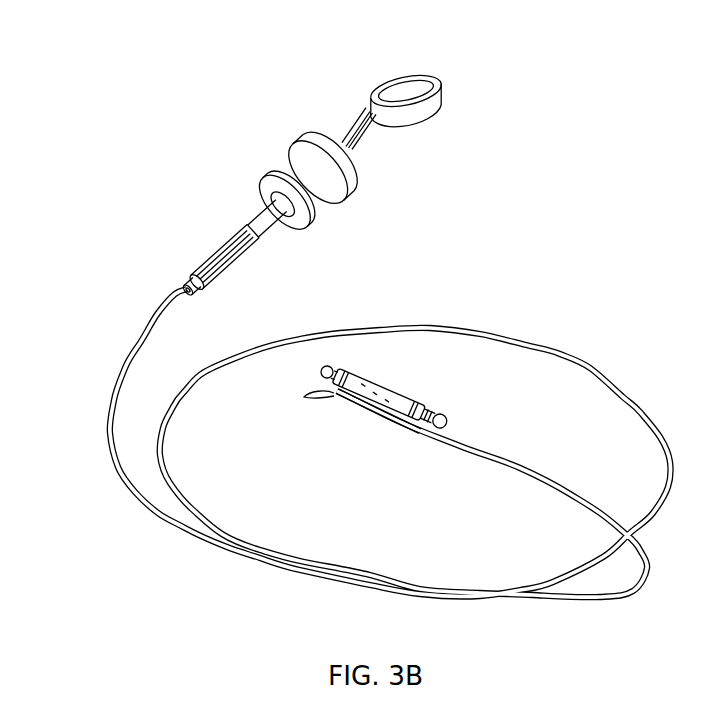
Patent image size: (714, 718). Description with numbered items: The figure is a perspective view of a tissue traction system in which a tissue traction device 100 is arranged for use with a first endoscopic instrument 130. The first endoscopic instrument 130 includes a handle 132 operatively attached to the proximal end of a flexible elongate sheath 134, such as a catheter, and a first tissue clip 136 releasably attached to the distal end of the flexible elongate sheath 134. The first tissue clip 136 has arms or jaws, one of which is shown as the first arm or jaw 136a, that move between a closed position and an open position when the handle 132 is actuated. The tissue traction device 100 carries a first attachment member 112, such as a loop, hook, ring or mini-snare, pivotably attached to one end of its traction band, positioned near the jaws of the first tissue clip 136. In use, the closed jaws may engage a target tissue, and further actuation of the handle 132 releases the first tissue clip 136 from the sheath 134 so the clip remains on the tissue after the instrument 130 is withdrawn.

The first endoscopic instrument 130 is at (235, 163).
The handle 132 is at (343, 140).
The flexible elongate sheath 134 is at (535, 347).
The first tissue clip 136 is at (343, 424).
The first arm or jaw 136a is at (328, 366).
The tissue traction device 100 is at (408, 358).
The first attachment member 112 is at (318, 378).